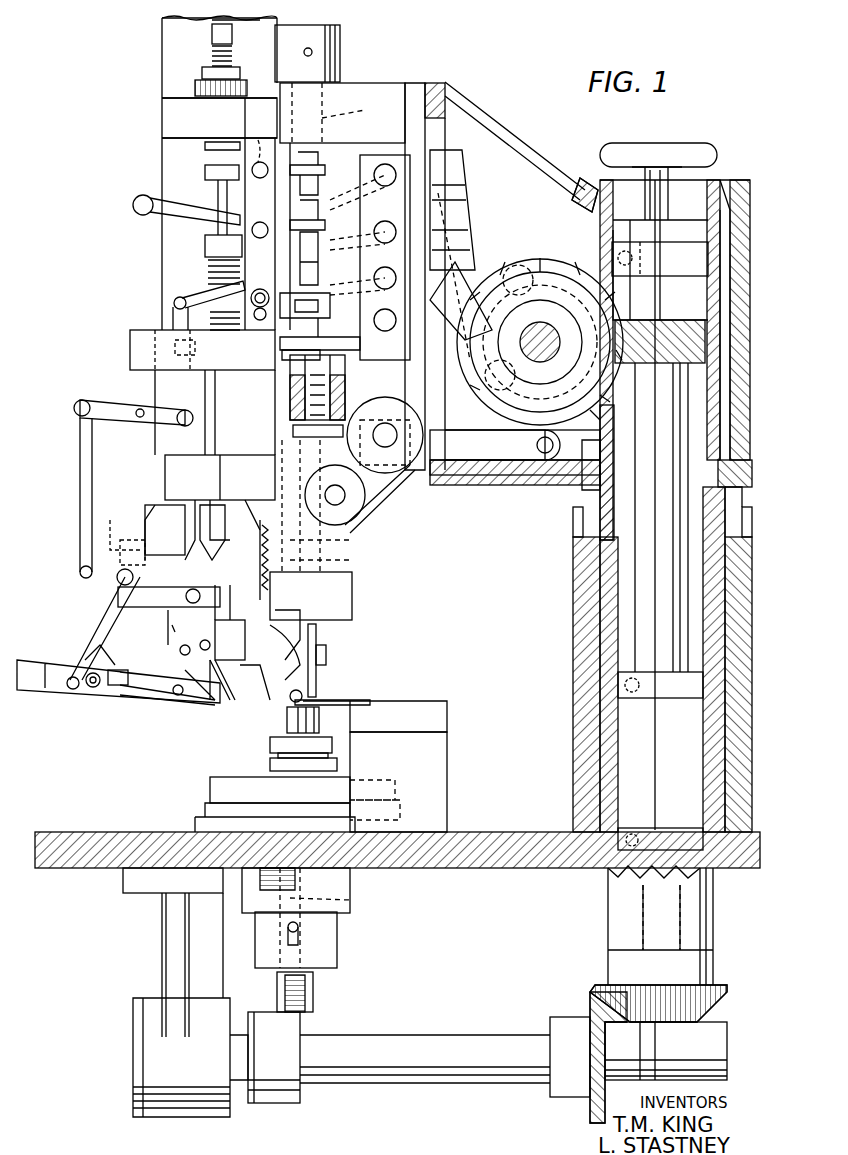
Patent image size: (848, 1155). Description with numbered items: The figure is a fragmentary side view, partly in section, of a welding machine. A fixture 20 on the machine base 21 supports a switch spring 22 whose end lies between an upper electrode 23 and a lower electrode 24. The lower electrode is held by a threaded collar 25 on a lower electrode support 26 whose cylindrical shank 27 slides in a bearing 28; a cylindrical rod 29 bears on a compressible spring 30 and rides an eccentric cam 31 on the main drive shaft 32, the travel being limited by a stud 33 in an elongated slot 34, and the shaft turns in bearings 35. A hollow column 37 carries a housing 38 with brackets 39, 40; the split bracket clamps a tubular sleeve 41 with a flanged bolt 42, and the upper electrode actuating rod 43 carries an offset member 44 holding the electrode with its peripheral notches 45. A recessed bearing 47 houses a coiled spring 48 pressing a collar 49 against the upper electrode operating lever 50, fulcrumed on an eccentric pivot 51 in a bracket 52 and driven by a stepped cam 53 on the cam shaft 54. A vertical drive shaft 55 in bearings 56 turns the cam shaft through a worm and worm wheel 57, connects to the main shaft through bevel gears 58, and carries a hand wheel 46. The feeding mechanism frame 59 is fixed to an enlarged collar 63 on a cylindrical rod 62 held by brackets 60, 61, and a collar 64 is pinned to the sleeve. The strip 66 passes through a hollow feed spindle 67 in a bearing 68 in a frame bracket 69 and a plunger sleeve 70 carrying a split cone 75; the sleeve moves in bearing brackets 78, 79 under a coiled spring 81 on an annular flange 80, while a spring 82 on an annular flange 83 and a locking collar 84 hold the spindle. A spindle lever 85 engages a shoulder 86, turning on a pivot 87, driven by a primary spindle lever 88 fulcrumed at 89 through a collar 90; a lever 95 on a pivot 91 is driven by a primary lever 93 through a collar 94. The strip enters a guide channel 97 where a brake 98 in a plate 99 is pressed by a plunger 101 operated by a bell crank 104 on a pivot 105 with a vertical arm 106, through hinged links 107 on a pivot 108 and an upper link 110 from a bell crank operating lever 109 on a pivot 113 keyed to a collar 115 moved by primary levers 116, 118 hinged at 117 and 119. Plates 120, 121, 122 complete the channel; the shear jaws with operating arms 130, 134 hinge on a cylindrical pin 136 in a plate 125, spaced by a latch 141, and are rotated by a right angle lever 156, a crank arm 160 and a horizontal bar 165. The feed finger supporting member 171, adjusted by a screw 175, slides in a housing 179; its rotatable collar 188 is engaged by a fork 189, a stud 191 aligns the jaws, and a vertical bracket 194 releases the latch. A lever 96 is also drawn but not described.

The fixture 20 is at (440, 752).
The machine base 21 is at (452, 840).
The switch spring 22 is at (405, 700).
The upper electrode 23 is at (320, 697).
The lower electrode 24 is at (322, 727).
The threaded collar 25 is at (340, 757).
The lower electrode support 26 is at (223, 787).
The cylindrical shank 27 is at (353, 901).
The bearing 28 is at (340, 920).
The cylindrical rod 29 is at (337, 954).
The compressible spring 30 is at (300, 887).
The eccentric cam 31 is at (300, 1103).
The main drive shaft 32 is at (406, 1050).
The stud 33 is at (286, 926).
The elongated slot 34 is at (286, 946).
The bearings 35 is at (170, 1105).
The hollow column 37 is at (578, 606).
The housing 38 is at (530, 150).
The bracket 39 is at (390, 495).
The bracket 40 is at (288, 400).
The tubular sleeve 41 is at (350, 544).
The flanged bolt 42 is at (340, 507).
The upper electrode actuating rod 43 is at (350, 564).
The offset member 44 is at (352, 608).
The peripheral notches 45 is at (320, 642).
The hand wheel 46 is at (630, 148).
The recessed bearing 47 is at (288, 414).
The coiled spring 48 is at (290, 434).
The collar 49 is at (282, 472).
The upper electrode operating lever 50 is at (485, 462).
The pivot 51 is at (400, 482).
The bracket 52 is at (420, 387).
The stepped cam 53 is at (585, 452).
The cam shaft 54 is at (558, 352).
The vertical drive shaft 55 is at (645, 634).
The bearings 56 is at (650, 276).
The worm and worm wheel 57 is at (640, 365).
The bevel gears 58 is at (630, 1062).
The feeding mechanism frame 59 is at (172, 52).
The bracket 60 is at (348, 100).
The bracket 61 is at (282, 346).
The cylindrical rod 62 is at (341, 113).
The enlarged collar 63 is at (342, 45).
The collar 64 is at (238, 542).
The strip 66 is at (215, 22).
The hollow feed spindle 67 is at (216, 188).
The bearing 68 is at (196, 84).
The frame bracket 69 is at (182, 112).
The plunger sleeve 70 is at (225, 440).
The split cone 75 is at (210, 507).
The bearing bracket 78 is at (288, 370).
The bearing bracket 79 is at (180, 467).
The annular flange 80 is at (206, 244).
The coiled spring 81 is at (208, 264).
The spring 82 is at (210, 58).
The annular flange 83 is at (233, 34).
The collar 84 is at (232, 70).
The spindle lever 85 is at (222, 150).
The shoulder 86 is at (206, 172).
The pivot 87 is at (258, 146).
The primary spindle lever 88 is at (450, 172).
The fulcrum 89 is at (383, 165).
The collar 90 is at (316, 157).
The pivot 91 is at (258, 222).
The primary lever 93 is at (458, 214).
The collar 94 is at (330, 240).
The lever 95 is at (325, 228).
The lever 96 is at (140, 200).
The guide channel 97 is at (234, 600).
The brake 98 is at (170, 542).
The plate 99 is at (190, 517).
The plunger 101 is at (150, 510).
The bell crank 104 is at (108, 603).
The pivot 105 is at (110, 588).
The vertical arm 106 is at (117, 531).
The hinged links 107 is at (103, 402).
The pivot 108 is at (158, 397).
The bell crank operating lever 109 is at (193, 295).
The upper link 110 is at (150, 384).
The pivot 113 is at (260, 290).
The collar 115 is at (324, 324).
The primary lever 116 is at (490, 276).
The hinge 117 is at (445, 270).
The primary lever 118 is at (508, 347).
The pivot 119 is at (375, 318).
The plate 120 is at (250, 502).
The left hand plate 121 is at (158, 607).
The right hand plate 122 is at (299, 623).
The plate 125 is at (288, 642).
The operating arm 130 is at (255, 707).
The operating arm 134 is at (200, 678).
The cylindrical pin 136 is at (305, 700).
The latch 141 is at (232, 637).
The right angle lever 156 is at (180, 650).
The crank arm 160 is at (175, 632).
The horizontal bar 165 is at (213, 587).
The supporting member 171 is at (148, 702).
The screw 175 is at (103, 690).
The housing 179 is at (28, 682).
The rotatable collar 188 is at (73, 690).
The fork 189 is at (85, 660).
The stud 191 is at (180, 698).
The vertical bracket 194 is at (228, 702).